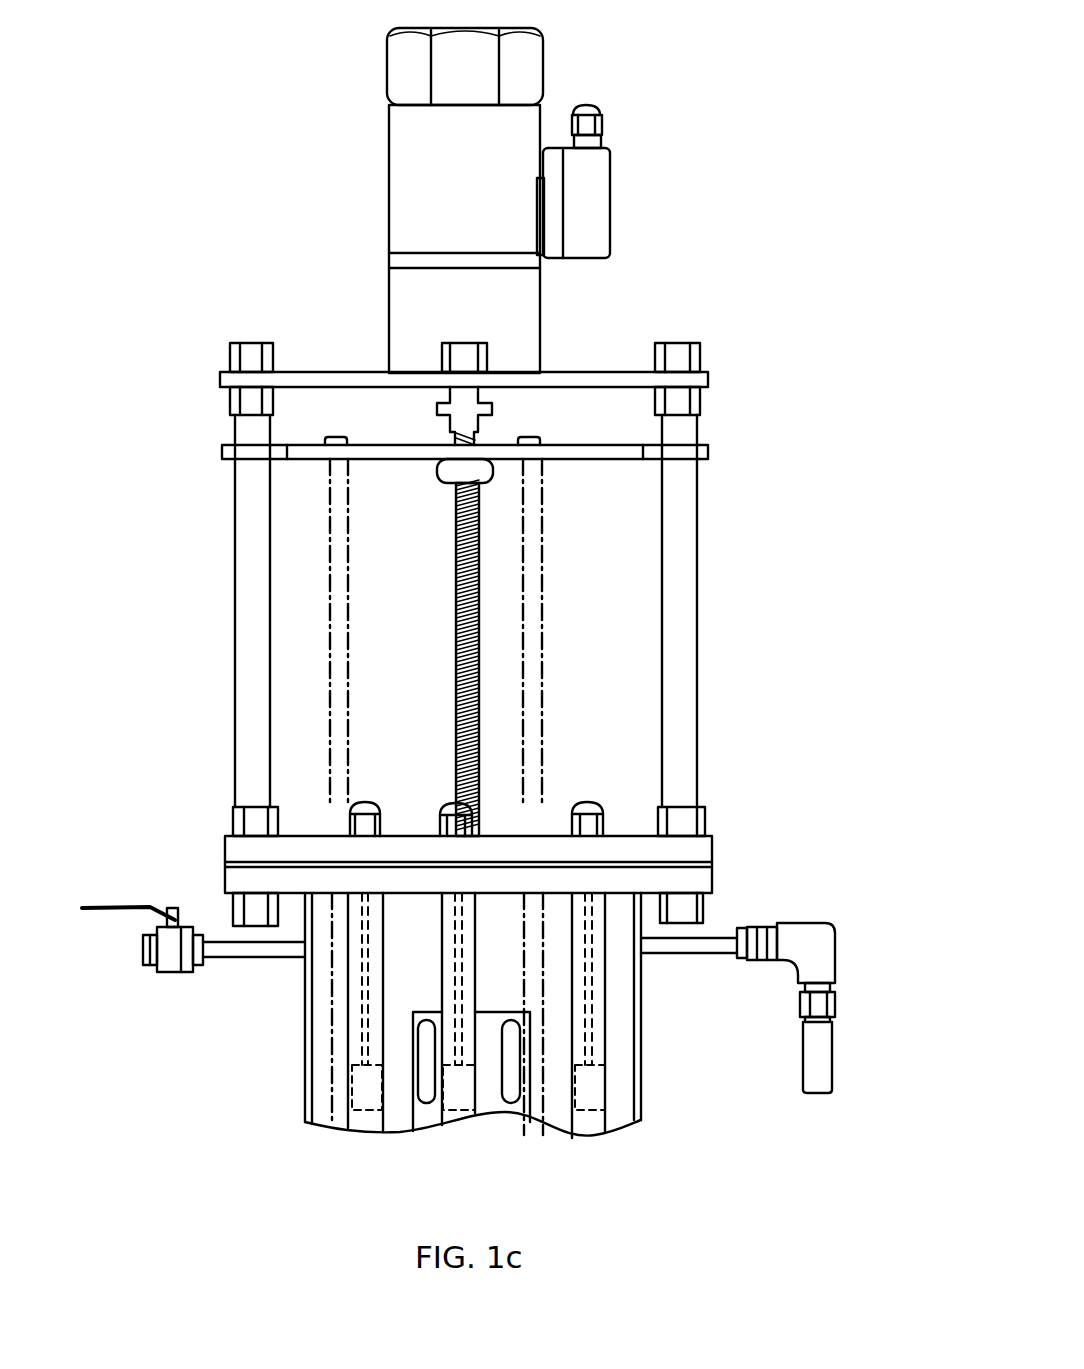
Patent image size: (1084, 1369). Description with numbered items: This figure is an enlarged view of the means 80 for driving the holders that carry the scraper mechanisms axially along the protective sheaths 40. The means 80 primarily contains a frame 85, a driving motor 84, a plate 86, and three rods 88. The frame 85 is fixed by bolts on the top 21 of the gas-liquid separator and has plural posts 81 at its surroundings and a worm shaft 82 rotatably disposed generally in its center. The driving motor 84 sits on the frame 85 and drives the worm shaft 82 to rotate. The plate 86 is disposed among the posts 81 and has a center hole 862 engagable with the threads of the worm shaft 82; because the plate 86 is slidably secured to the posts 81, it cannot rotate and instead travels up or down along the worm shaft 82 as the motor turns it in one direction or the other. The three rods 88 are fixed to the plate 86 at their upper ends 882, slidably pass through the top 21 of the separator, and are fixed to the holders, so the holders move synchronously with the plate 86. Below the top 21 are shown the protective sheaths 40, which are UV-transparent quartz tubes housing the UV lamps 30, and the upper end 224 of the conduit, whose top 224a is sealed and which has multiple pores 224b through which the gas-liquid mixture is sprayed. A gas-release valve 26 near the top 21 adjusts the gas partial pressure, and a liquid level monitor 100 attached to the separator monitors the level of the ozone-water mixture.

The means for driving the holders 80 is at (200, 190).
The driving motor 84 is at (545, 47).
The upper ends 882 is at (330, 437).
The plate 86 is at (708, 453).
The frame 85 is at (863, 456).
The posts 81 is at (692, 505).
The worm shaft 82 is at (480, 568).
The center hole 862 is at (442, 483).
The rods 88 is at (335, 633).
The top of the gas-liquid separator 21 is at (700, 882).
The gas-release valve 26 is at (173, 908).
The protective sheaths 40 is at (636, 1012).
The upper end of the conduit 224 is at (125, 1040).
The top of the upper end 224a is at (438, 1012).
The pores 224b is at (423, 1050).
The UV lamps 30 is at (590, 1118).
The liquid level monitor 100 is at (827, 1068).